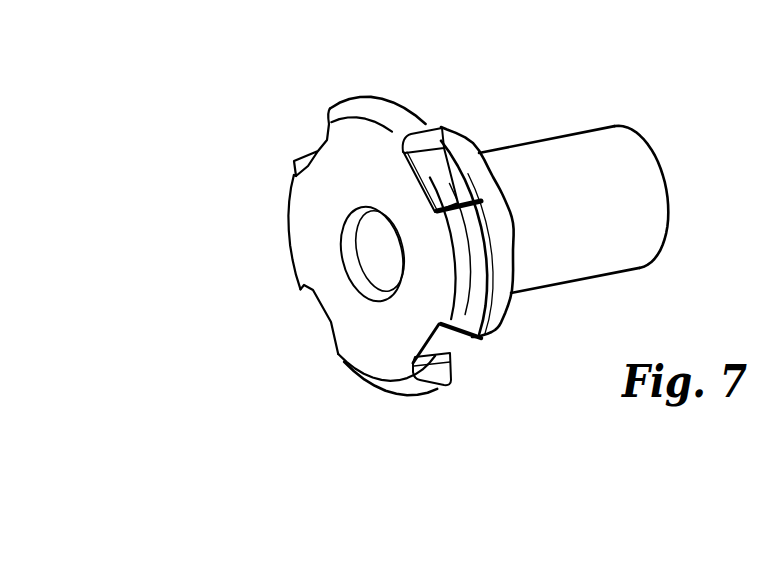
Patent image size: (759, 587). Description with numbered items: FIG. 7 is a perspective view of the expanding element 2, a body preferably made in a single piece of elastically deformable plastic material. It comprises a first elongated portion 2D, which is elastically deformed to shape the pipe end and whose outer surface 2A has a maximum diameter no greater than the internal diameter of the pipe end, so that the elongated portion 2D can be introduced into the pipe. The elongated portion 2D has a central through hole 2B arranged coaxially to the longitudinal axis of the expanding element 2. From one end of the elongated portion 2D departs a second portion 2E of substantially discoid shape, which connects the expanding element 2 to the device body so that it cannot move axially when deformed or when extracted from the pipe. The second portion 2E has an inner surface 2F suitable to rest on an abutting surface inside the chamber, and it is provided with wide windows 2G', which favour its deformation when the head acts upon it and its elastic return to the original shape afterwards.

The expanding element 2 is at (207, 63).
The outer surface 2A is at (600, 222).
The central through hole 2B is at (380, 258).
The first elongated portion 2D is at (560, 116).
The second portion 2E is at (392, 98).
The inner surface 2F is at (382, 178).
The windows 2G' is at (402, 226).